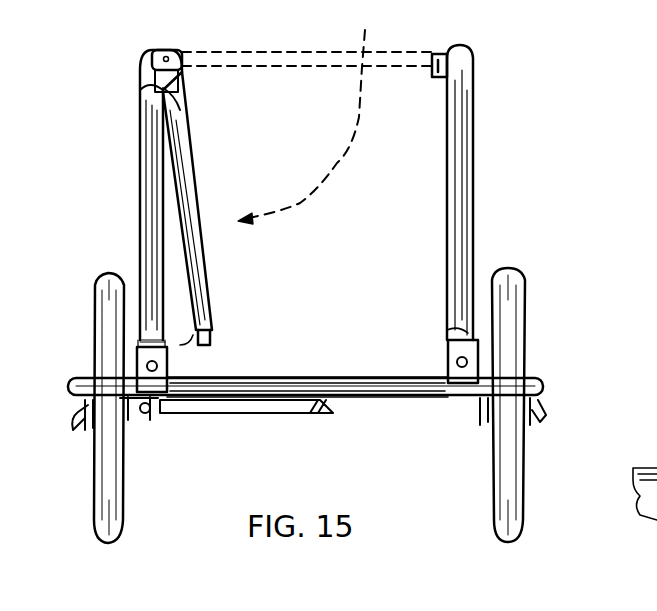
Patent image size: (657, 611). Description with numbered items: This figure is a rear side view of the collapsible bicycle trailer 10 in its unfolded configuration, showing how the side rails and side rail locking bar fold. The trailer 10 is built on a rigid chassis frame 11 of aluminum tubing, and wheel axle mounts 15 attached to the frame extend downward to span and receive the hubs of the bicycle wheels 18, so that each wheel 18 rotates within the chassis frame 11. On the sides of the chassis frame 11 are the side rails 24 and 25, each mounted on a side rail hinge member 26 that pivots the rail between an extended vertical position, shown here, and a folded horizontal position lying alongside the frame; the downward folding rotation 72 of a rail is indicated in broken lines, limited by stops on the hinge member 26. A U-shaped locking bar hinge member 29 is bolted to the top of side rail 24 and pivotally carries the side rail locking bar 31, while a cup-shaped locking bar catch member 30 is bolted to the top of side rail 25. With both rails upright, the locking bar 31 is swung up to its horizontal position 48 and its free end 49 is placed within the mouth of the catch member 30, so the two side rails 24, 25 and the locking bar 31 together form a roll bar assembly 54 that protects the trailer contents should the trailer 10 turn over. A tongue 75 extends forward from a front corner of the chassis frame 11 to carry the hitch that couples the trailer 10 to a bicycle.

The collapsible bicycle trailer 10 is at (522, 176).
The chassis frame 11 is at (536, 373).
The wheel axle mount 15 is at (85, 420).
The bicycle wheel 18 is at (110, 452).
The side rail 24 is at (150, 63).
The side rail 25 is at (468, 57).
The side rail hinge member 26 is at (162, 374).
The locking bar hinge member 29 is at (167, 50).
The locking bar catch member 30 is at (411, 78).
The side rail locking bar 31 is at (163, 90).
The horizontal position 48 is at (198, 288).
The free end 49 is at (210, 333).
The roll bar assembly 54 is at (309, 115).
The downward folding rotation 72 is at (298, 204).
The tongue 75 is at (145, 414).